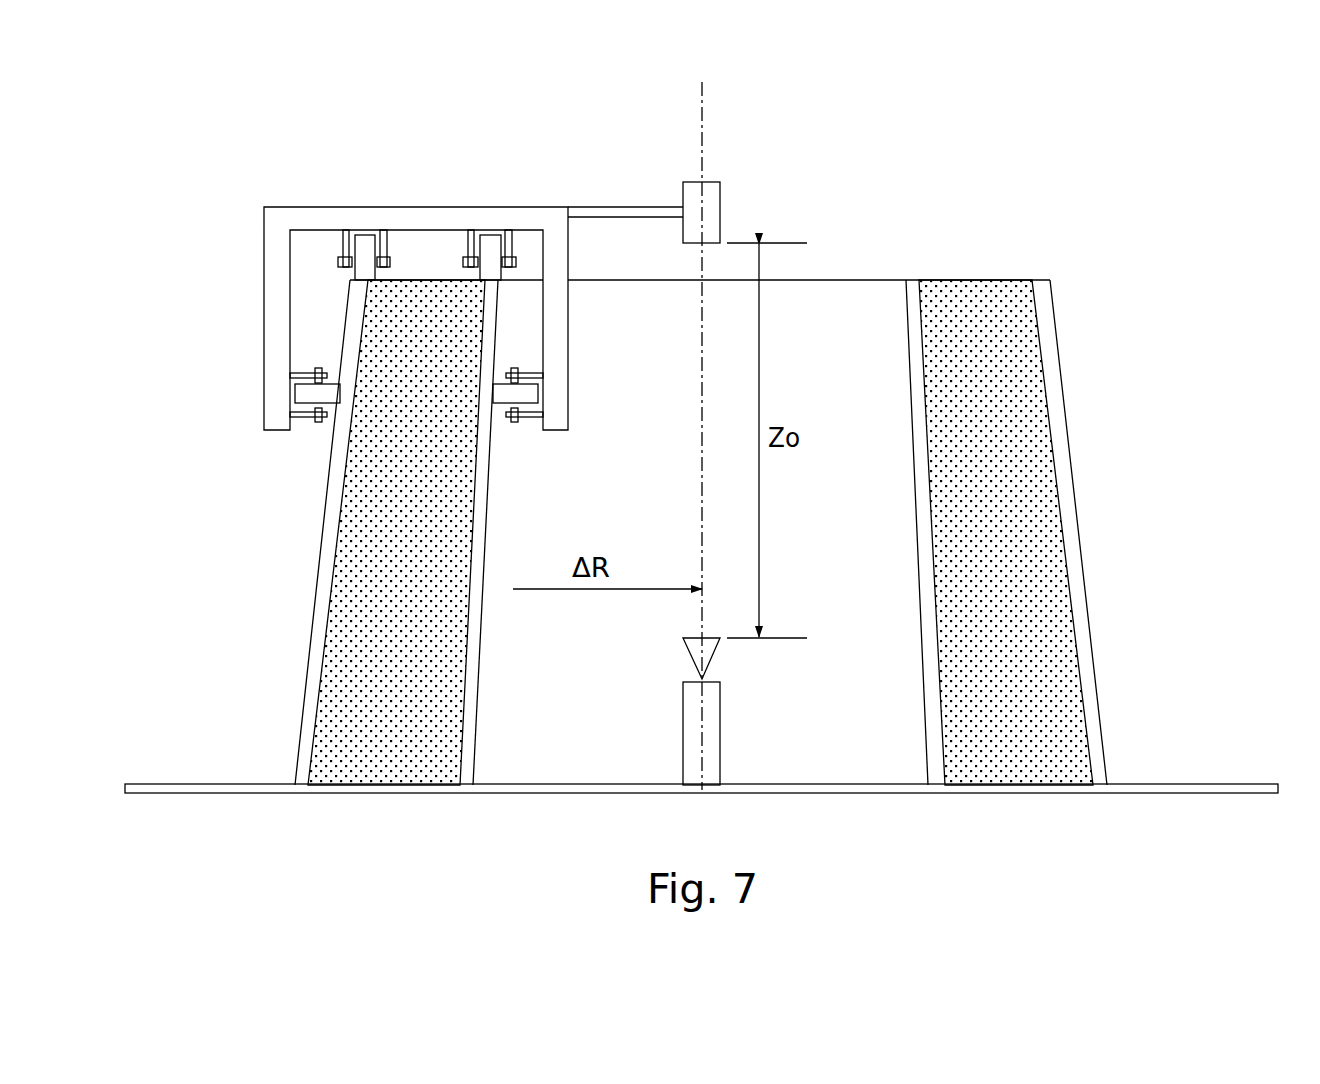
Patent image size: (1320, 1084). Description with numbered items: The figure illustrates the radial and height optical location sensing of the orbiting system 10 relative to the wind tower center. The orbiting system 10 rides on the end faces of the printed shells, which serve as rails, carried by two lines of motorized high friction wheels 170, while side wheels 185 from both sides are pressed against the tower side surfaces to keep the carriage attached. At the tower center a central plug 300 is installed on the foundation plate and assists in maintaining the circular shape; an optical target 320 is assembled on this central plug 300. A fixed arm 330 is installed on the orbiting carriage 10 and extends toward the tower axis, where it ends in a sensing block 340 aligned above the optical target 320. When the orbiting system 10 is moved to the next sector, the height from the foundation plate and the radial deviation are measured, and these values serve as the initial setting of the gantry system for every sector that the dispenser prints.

The orbiting system 10 is at (422, 217).
The motorized high friction wheels 170 is at (357, 273).
The side wheels 185 is at (498, 397).
The central plug 300 is at (720, 733).
The optical target 320 is at (697, 670).
The fixed arm 330 is at (619, 207).
The mounting block 340 is at (720, 215).